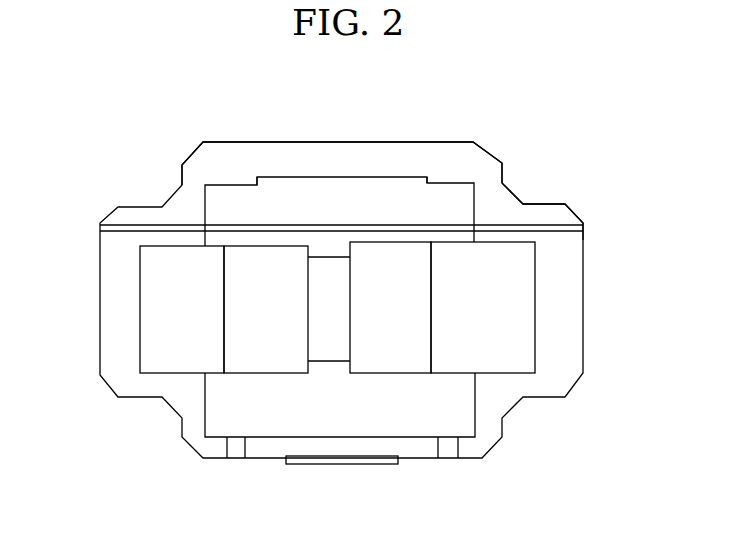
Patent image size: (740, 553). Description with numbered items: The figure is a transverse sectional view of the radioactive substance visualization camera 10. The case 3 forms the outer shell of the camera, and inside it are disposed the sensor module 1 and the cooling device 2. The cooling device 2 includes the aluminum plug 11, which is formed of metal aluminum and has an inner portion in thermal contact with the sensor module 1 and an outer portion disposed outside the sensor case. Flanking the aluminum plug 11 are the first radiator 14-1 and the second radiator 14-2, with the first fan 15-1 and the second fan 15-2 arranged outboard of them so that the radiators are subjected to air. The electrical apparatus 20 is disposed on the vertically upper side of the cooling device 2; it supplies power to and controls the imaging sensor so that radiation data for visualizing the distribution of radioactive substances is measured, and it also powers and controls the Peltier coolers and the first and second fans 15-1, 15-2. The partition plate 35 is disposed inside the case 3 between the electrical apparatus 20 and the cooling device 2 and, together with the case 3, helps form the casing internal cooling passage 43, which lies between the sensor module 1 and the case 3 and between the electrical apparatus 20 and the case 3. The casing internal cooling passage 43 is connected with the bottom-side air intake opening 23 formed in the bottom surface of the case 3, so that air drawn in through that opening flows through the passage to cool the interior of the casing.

The radioactive substance visualization camera 10 is at (324, 115).
The sensor module 1 is at (459, 183).
The cooling device 2 is at (555, 278).
The case 3 is at (100, 282).
The aluminum plug 11 is at (335, 362).
The first radiator 14-1 is at (420, 345).
The second radiator 14-2 is at (270, 345).
The first fan 15-1 is at (520, 343).
The second fan 15-2 is at (157, 355).
The electrical apparatus 20 is at (407, 177).
The bottom-side air intake opening 23 is at (373, 465).
The partition plate 35 is at (512, 220).
The casing internal cooling passage 43 is at (230, 160).